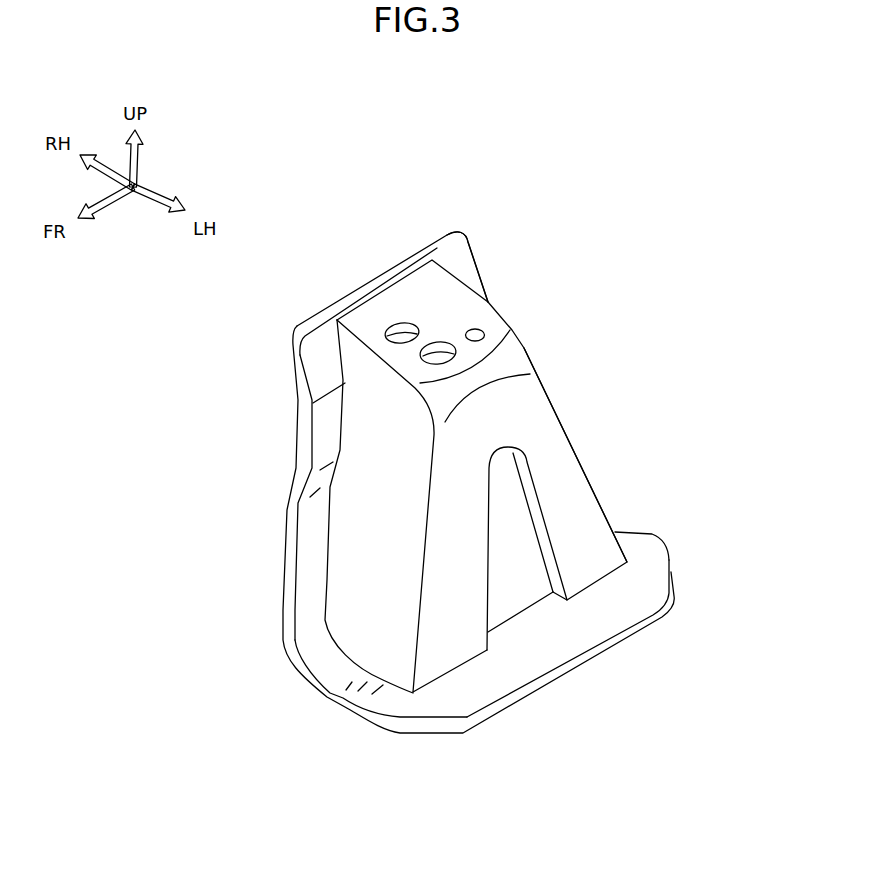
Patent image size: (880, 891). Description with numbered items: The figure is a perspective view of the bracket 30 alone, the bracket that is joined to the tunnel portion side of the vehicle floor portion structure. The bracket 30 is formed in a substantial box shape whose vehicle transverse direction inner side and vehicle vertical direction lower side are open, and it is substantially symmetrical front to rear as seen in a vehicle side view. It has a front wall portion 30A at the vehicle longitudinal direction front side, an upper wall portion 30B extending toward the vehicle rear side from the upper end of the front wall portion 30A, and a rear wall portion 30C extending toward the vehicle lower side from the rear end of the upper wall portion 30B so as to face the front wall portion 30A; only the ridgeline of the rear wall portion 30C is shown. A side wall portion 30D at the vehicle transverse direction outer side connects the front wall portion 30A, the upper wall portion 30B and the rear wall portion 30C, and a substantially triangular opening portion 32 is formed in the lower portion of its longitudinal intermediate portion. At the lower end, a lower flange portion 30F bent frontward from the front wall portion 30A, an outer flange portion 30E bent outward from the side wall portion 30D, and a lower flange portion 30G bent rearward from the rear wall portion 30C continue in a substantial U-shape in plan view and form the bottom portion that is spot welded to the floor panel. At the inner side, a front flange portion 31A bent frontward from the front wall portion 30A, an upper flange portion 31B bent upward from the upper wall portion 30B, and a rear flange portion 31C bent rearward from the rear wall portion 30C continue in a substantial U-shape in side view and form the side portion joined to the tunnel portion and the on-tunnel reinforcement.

The bracket 30 is at (553, 692).
The front wall portion 30A is at (370, 570).
The upper wall portion 30B is at (427, 297).
The rear wall portion 30C is at (580, 461).
The side wall portion 30D is at (542, 440).
The outer flange portion 30E is at (587, 620).
The lower flange portion 30F is at (350, 680).
The lower flange portion 30G is at (625, 538).
The front flange portion 31A is at (312, 527).
The upper flange portion 31B is at (360, 301).
The rear flange portion 31C is at (462, 263).
The opening portion 32 is at (530, 507).